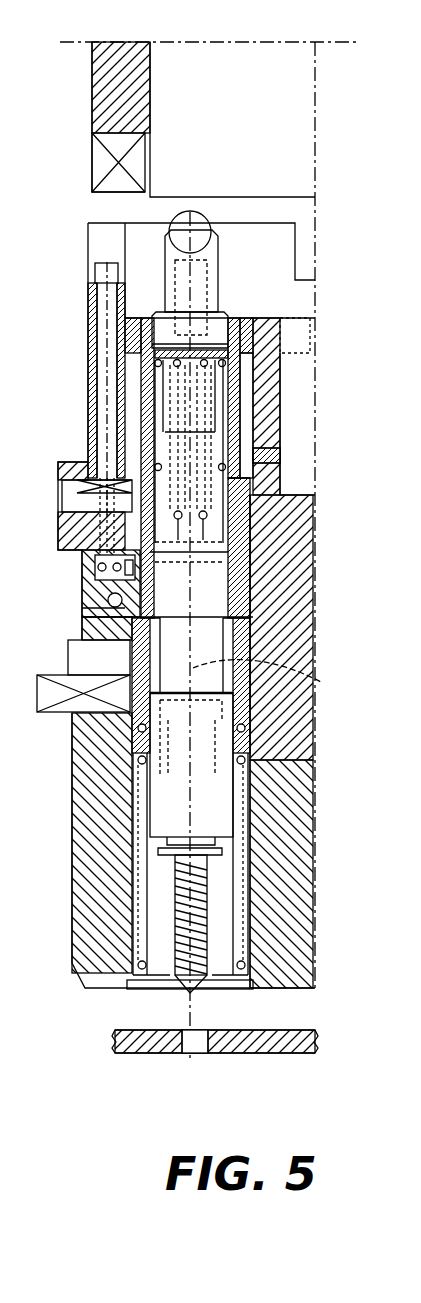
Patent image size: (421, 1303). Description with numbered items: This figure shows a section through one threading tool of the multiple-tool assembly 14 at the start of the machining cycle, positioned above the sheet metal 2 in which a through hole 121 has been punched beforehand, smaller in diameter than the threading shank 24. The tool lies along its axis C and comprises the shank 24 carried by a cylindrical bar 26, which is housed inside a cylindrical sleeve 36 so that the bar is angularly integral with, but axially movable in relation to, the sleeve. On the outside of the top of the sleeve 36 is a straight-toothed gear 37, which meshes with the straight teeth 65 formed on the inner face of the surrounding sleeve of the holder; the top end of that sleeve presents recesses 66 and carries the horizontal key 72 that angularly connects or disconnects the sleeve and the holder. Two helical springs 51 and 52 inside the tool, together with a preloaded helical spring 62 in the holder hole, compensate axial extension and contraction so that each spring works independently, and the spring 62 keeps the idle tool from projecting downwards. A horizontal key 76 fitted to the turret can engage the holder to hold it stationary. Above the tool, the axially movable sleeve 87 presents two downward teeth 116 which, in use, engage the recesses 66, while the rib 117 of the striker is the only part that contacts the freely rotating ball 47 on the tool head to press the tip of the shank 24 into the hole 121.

The sleeve 87 is at (80, 72).
The teeth 116 is at (132, 164).
The rib 117 is at (272, 98).
The ball 47 is at (186, 222).
The recesses 66 is at (93, 280).
The straight-toothed gear 37 is at (258, 318).
The straight teeth 65 is at (100, 405).
The helical spring 51 is at (150, 437).
The helical spring 52 is at (196, 400).
The horizontal key 72 is at (77, 482).
The cylindrical sleeve 36 is at (130, 553).
The horizontal key 76 is at (42, 690).
The cylindrical bar 26 is at (172, 680).
The axis C is at (268, 675).
The preloaded helical spring 62 is at (250, 915).
The threading shank 24 is at (178, 940).
The multiple-tool assembly 14 is at (343, 975).
The through hole 121 is at (203, 1043).
The sheet metal 2 is at (276, 1050).